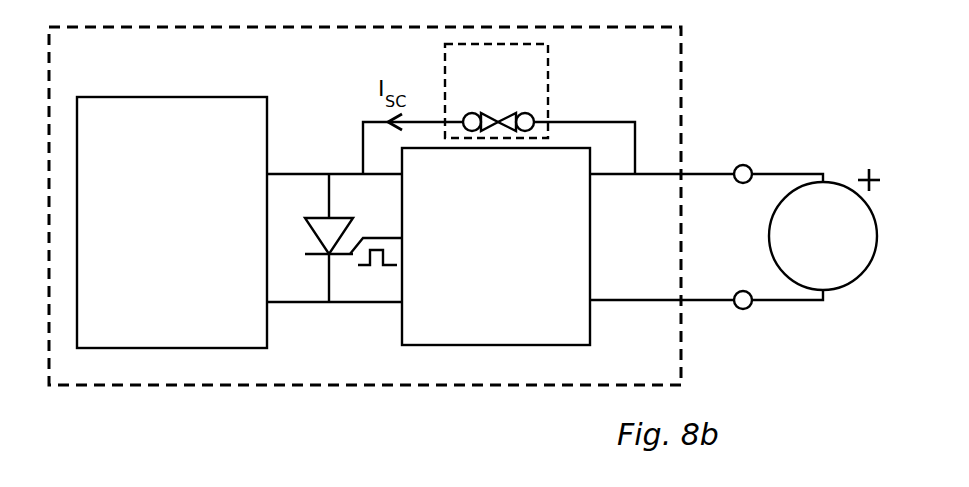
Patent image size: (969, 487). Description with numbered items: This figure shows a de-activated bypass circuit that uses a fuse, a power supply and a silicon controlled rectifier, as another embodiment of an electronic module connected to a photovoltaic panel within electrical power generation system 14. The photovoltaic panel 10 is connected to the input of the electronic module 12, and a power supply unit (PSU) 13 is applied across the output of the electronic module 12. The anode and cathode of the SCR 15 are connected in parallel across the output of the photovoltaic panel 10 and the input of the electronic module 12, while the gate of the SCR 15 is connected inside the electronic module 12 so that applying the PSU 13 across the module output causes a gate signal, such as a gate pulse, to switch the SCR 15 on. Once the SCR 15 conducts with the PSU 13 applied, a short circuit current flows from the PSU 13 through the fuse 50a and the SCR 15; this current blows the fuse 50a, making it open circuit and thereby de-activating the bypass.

The photovoltaic panel 10 is at (172, 222).
The electronic module 12 is at (496, 246).
The power supply unit (PSU) 13 is at (823, 236).
The electrical power generation system 14 is at (294, 387).
The silicon controlled rectifier (SCR) 15 is at (307, 216).
The fuse 50a is at (496, 91).